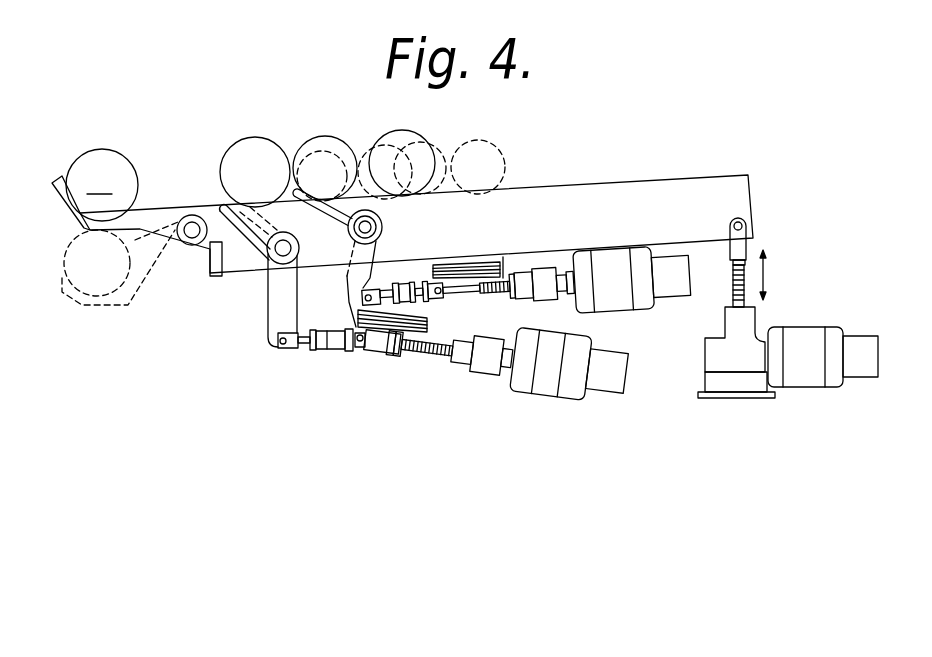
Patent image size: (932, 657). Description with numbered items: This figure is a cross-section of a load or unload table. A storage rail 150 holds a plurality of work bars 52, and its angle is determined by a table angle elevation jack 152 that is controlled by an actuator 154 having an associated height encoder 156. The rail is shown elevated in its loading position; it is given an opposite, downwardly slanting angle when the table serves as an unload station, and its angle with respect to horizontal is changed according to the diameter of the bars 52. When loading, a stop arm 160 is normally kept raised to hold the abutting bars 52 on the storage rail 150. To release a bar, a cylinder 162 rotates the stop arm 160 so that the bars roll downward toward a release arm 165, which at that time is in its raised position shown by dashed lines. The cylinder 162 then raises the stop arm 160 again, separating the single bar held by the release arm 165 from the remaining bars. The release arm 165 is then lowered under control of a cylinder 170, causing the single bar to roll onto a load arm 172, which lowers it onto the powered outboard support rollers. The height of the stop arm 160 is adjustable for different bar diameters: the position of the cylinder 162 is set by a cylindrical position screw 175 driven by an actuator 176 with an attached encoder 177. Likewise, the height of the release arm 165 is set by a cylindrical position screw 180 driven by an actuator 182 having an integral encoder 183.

The work bar 52 is at (323, 137).
The storage rail 150 is at (568, 197).
The table angle elevation jack 152 is at (747, 333).
The actuator 154 is at (808, 373).
The height encoder 156 is at (862, 340).
The stop arm 160 is at (338, 222).
The cylinder 162 is at (410, 299).
The release arm 165 is at (252, 250).
The cylinder 170 is at (340, 347).
The load arm 172 is at (68, 208).
The cylindrical position screw 175 is at (507, 292).
The actuator 176 is at (617, 298).
The encoder 177 is at (673, 290).
The cylindrical position screw 180 is at (433, 355).
The actuator 182 is at (550, 387).
The encoder 183 is at (613, 380).